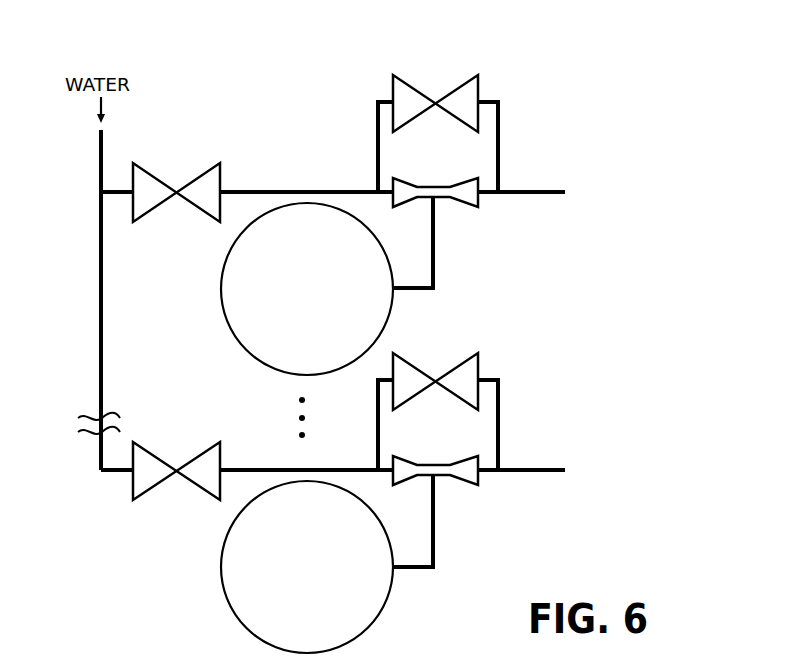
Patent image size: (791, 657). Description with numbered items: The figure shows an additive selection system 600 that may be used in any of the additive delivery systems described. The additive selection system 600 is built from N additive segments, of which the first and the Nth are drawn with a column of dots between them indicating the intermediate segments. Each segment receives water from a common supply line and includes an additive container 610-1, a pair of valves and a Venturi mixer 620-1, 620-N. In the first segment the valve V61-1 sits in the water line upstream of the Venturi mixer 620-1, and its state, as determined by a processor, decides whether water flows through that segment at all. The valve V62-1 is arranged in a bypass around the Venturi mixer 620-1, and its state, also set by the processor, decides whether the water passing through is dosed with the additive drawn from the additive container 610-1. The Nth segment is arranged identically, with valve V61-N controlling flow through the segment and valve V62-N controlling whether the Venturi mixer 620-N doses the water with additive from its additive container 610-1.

The additive selection system 600 is at (592, 101).
The additive container 610-1 is at (337, 298).
The Venturi mixer 620-1 is at (457, 207).
The Venturi mixer 620-N is at (457, 485).
The valve V61-1 is at (176, 185).
The valve V61-N is at (176, 464).
The valve V62-1 is at (435, 96).
The valve V62-N is at (435, 374).